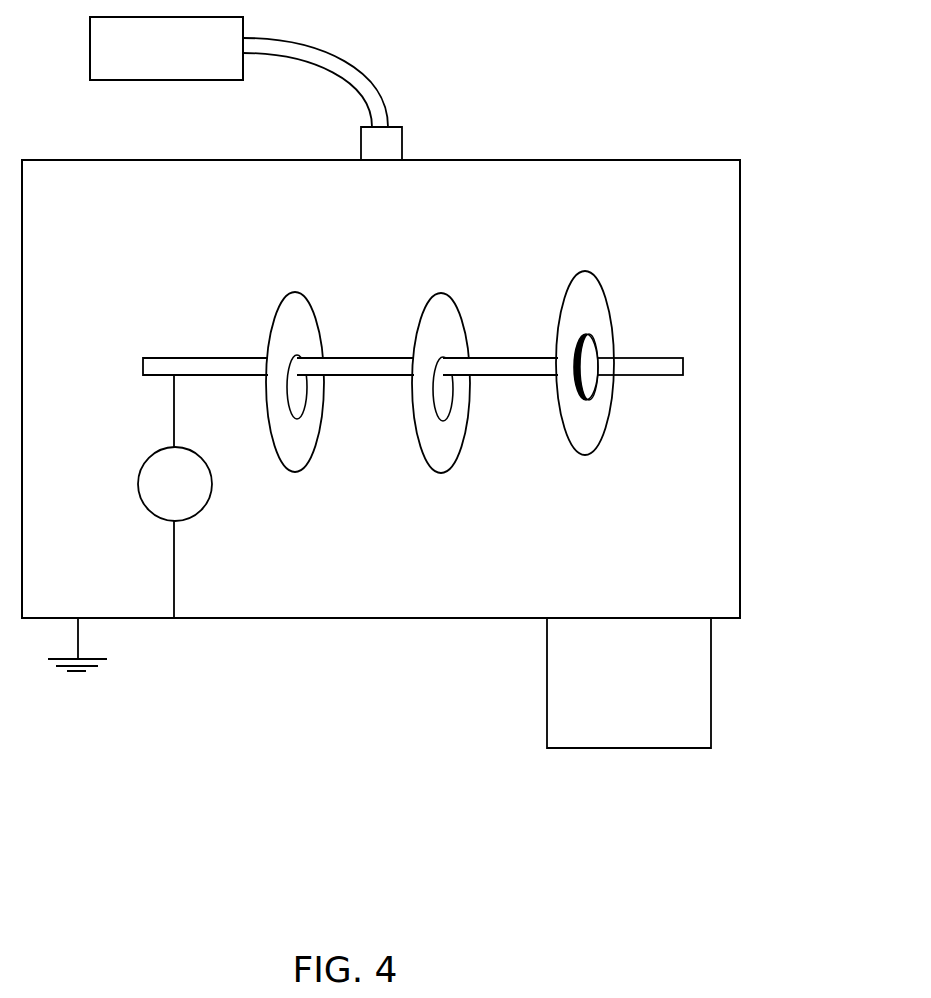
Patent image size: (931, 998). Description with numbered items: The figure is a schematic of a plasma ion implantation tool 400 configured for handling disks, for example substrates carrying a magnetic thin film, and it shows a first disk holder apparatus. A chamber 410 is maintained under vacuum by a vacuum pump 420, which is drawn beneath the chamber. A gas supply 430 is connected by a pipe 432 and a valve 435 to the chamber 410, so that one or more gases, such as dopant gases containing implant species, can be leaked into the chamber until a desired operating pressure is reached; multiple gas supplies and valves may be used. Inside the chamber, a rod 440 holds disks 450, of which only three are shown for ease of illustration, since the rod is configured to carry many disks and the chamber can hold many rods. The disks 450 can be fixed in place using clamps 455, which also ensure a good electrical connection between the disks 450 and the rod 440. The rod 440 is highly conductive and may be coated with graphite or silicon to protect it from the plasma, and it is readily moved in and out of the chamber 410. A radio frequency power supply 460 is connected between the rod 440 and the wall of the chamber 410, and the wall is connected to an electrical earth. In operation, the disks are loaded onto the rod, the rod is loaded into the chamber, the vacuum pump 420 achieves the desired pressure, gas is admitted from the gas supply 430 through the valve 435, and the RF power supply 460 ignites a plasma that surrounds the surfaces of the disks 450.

The plasma ion implantation tool 400 is at (565, 799).
The chamber 410 is at (733, 440).
The vacuum pump 420 is at (703, 683).
The gas supply 430 is at (100, 50).
The pipe 432 is at (357, 78).
The valve 435 is at (398, 148).
The rod 440 is at (146, 366).
The disks 450 is at (284, 333).
The clamps 455 is at (600, 382).
The radio frequency (RF) power supply 460 is at (204, 494).